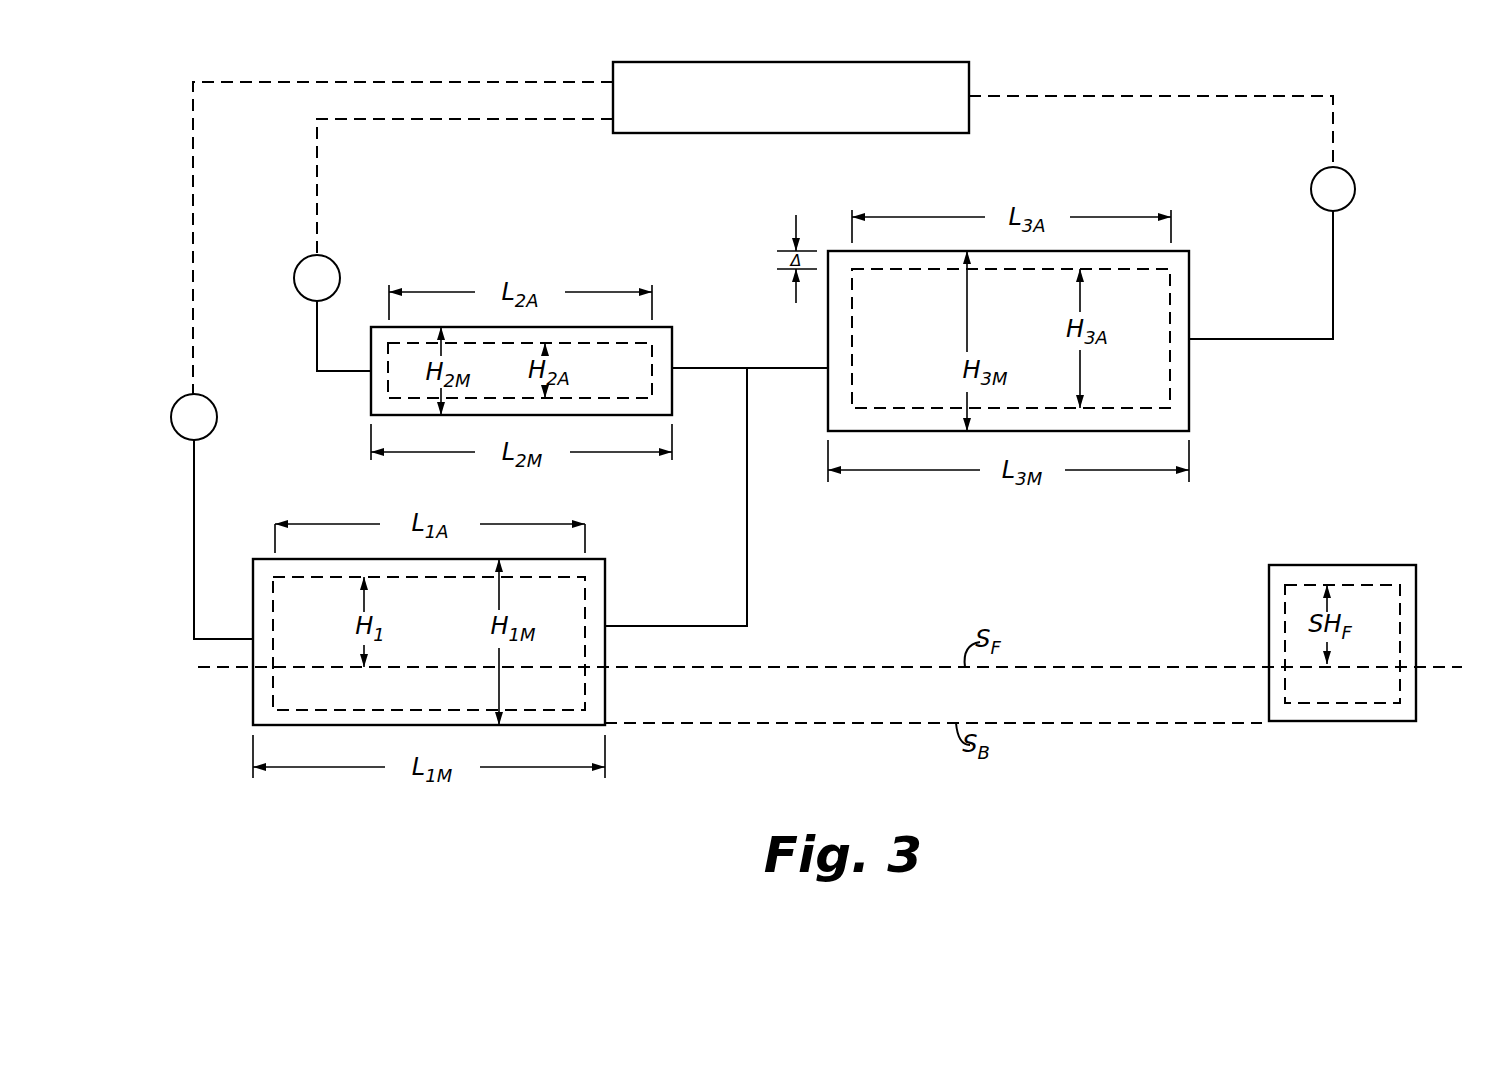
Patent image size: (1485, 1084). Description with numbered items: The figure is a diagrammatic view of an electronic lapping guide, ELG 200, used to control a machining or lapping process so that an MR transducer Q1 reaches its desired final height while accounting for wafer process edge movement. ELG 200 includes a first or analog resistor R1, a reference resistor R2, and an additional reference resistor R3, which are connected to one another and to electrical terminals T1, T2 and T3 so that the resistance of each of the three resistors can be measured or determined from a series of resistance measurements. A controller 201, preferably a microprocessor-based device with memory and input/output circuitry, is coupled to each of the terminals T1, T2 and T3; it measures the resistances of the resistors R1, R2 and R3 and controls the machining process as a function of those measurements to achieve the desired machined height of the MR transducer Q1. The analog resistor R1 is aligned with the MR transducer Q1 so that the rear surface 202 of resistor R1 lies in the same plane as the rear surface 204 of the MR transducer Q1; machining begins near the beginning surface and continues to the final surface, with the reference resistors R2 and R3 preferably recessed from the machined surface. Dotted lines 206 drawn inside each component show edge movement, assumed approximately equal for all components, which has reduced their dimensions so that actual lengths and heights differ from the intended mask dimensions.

The ELG 200 is at (545, 67).
The controller 201 is at (970, 72).
The rear surface 202 is at (428, 626).
The rear surface 204 is at (1313, 618).
The dotted lines 206 is at (655, 348).
The analog resistor R1 is at (253, 708).
The reference resistor R2 is at (381, 327).
The additional reference resistor R3 is at (1189, 251).
The MR transducer Q1 is at (1416, 578).
The electrical terminal T1 is at (212, 516).
The electrical terminal T2 is at (332, 313).
The electrical terminal T3 is at (1272, 253).